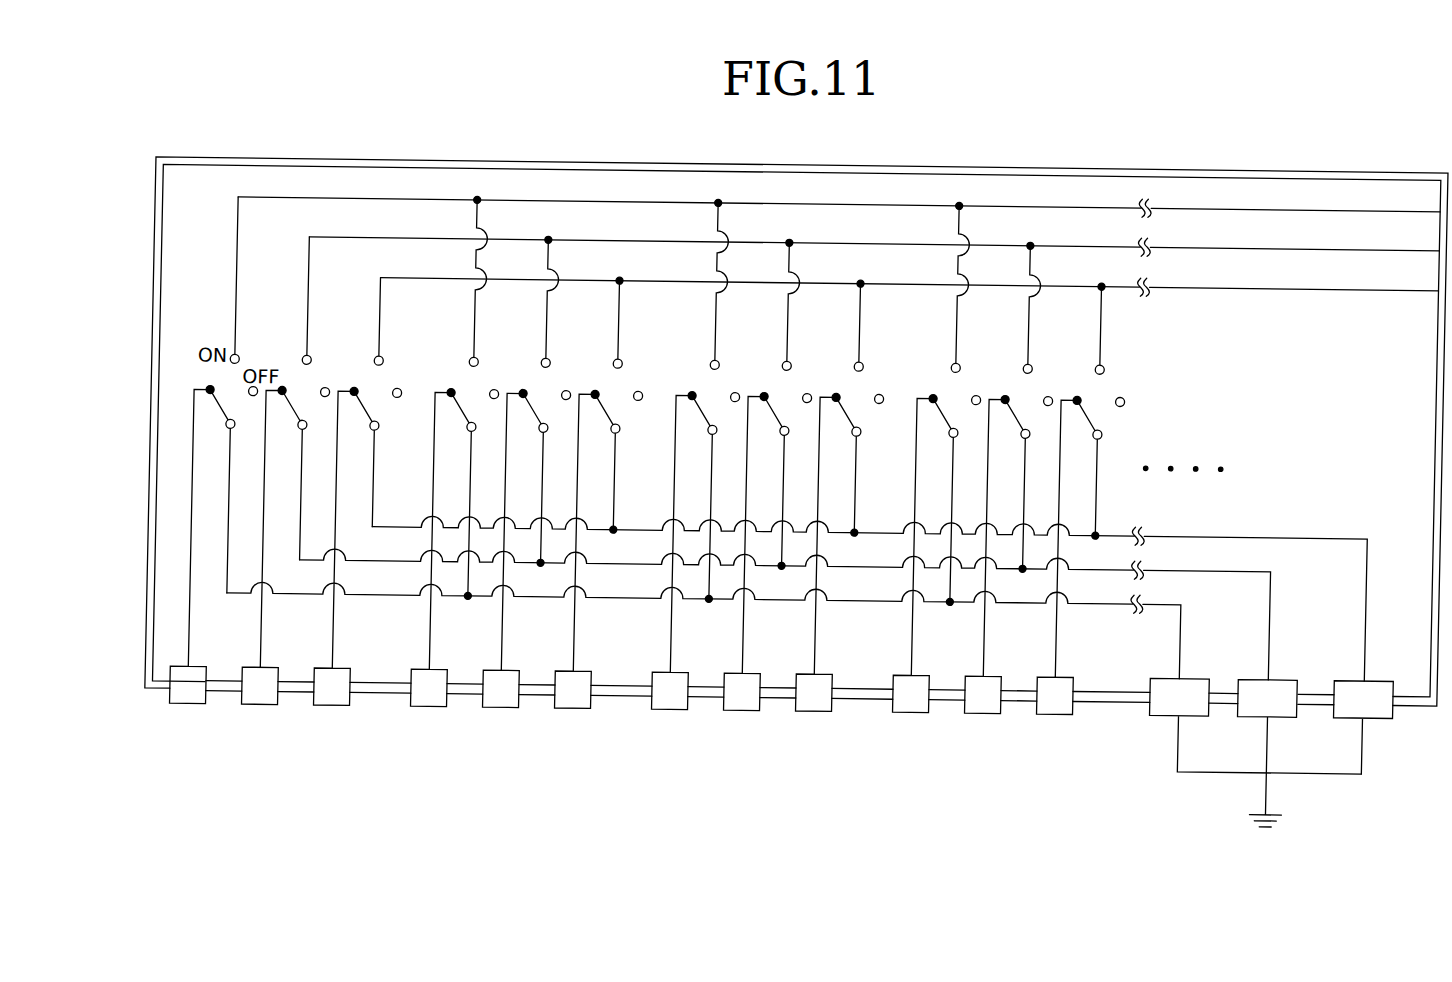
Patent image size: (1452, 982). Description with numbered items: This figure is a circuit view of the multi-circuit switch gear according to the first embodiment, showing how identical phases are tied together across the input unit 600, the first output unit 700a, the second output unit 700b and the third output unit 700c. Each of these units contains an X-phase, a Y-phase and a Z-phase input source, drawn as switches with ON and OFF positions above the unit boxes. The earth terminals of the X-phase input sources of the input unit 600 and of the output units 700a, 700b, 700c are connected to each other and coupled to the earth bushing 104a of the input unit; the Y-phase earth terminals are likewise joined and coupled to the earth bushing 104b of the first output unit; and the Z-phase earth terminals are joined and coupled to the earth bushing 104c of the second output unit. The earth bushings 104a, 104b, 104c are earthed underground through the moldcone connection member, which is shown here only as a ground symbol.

The input unit 600 is at (180, 735).
The first output unit 700a is at (421, 735).
The second output unit 700b is at (662, 735).
The third output unit 700c is at (903, 735).
The earth bushing of the input unit 104a is at (1255, 726).
The earth bushing of the first output unit 104b is at (1266, 754).
The earth bushing of the second output unit 104c is at (1362, 728).